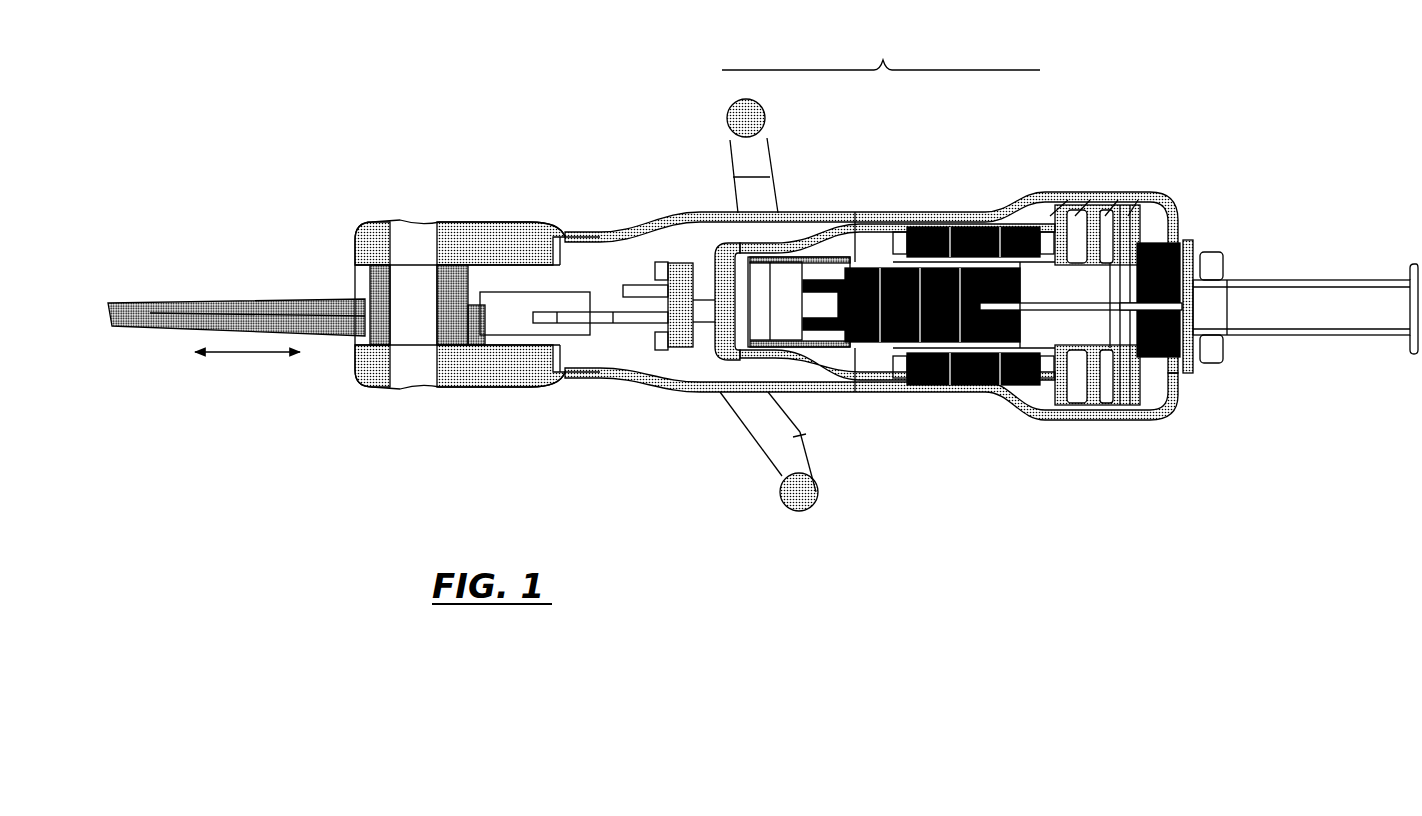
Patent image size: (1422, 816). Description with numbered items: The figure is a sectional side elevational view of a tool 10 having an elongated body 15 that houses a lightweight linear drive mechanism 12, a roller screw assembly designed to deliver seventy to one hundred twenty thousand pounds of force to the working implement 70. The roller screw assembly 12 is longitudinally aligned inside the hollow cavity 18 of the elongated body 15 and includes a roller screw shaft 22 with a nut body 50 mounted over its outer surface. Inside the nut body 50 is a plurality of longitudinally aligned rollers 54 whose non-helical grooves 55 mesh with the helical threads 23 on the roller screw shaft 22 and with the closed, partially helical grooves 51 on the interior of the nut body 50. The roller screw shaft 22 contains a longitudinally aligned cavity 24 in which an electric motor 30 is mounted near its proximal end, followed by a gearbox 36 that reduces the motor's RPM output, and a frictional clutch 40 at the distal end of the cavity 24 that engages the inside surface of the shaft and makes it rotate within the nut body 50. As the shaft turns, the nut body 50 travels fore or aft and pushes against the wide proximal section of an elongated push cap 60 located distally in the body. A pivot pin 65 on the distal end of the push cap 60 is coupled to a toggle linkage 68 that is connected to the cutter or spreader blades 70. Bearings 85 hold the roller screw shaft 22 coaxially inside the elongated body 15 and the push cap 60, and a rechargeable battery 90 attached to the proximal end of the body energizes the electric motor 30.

The tool 10 is at (330, 95).
The linear drive mechanism 12 is at (881, 47).
The elongated body 15 is at (945, 210).
The hollow cavity 18 is at (780, 214).
The roller screw shaft 22 is at (915, 216).
The helical threads 23 is at (840, 222).
The longitudinally aligned cavity 24 is at (780, 302).
The electric motor 30 is at (1082, 323).
The gearbox 36 is at (940, 395).
The frictional clutch 40 is at (783, 329).
The nut body 50 is at (929, 392).
The grooves 51 is at (931, 224).
The rollers 54 is at (993, 218).
The non-helical grooves 55 is at (1018, 215).
The push cap 60 is at (722, 240).
The pivot pin 65 is at (657, 285).
The toggle linkage 68 is at (594, 327).
The working implement 70 is at (330, 303).
The bearings 85 is at (1128, 212).
The rechargeable battery 90 is at (1312, 320).